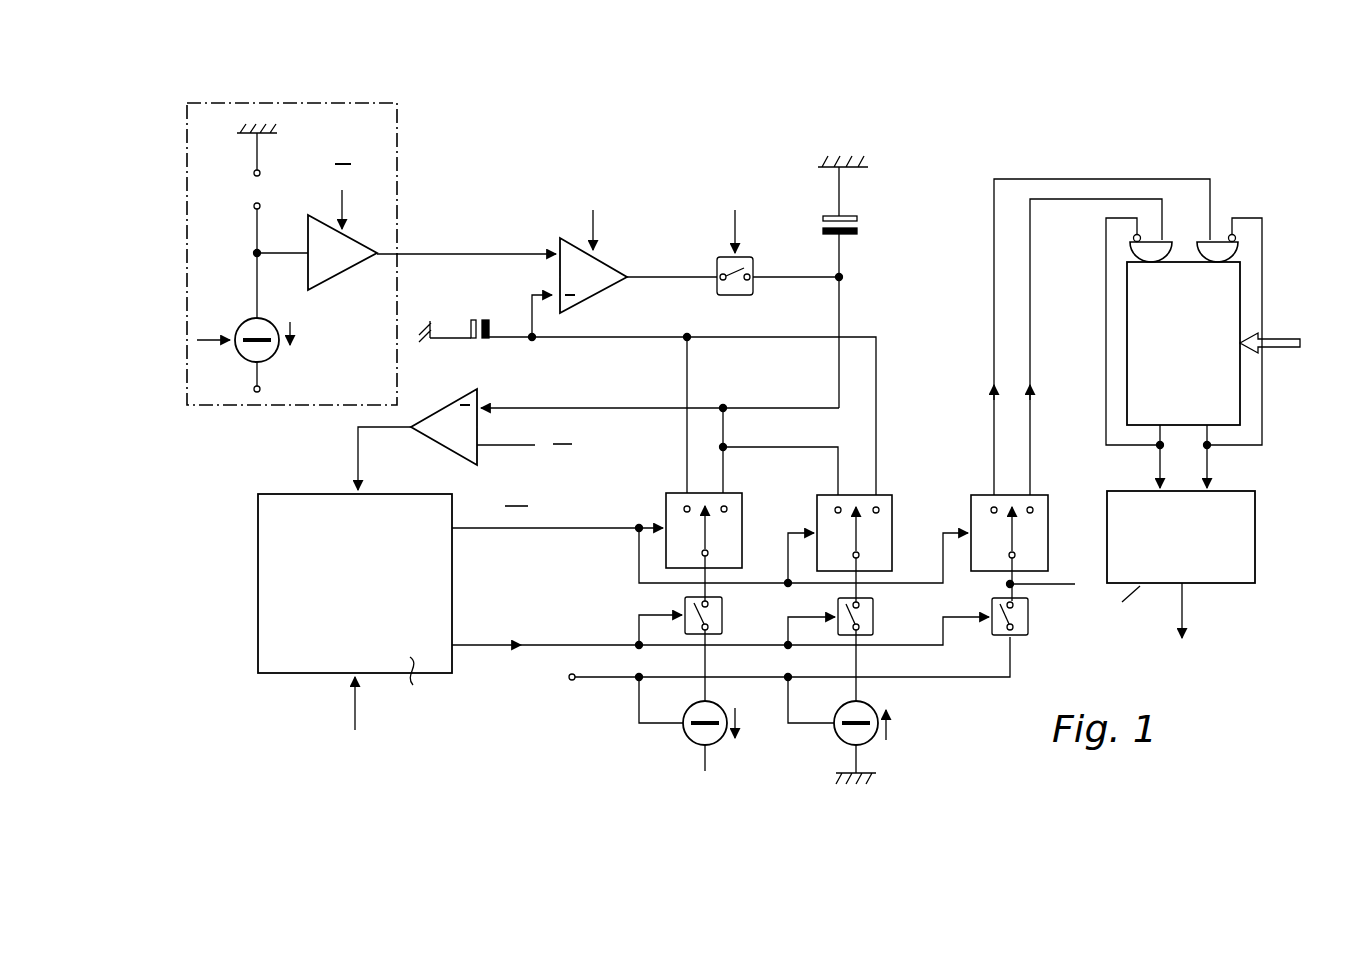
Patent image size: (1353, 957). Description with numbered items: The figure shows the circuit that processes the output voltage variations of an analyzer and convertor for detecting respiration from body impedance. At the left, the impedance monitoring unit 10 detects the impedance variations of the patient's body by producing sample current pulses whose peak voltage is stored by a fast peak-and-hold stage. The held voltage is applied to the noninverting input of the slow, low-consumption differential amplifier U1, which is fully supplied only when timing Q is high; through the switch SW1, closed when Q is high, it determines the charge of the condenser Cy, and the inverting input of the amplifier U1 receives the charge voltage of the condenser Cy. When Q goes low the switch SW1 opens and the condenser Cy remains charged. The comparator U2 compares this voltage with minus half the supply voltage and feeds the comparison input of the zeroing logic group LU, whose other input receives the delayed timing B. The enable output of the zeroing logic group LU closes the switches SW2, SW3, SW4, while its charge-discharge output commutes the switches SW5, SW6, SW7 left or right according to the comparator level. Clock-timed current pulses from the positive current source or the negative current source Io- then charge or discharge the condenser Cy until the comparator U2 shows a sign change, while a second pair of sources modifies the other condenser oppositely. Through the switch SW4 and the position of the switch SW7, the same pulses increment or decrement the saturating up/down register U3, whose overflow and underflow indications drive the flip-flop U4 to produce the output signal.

The impedance monitoring unit 10 is at (442, 120).
The differential amplifier U1 is at (647, 338).
The comparator U2 is at (598, 442).
The UP/DW programmable saturating register U3 is at (1204, 353).
The flip-flop U4 is at (1173, 575).
The switch SW1 is at (777, 250).
The switch SW2 is at (726, 647).
The switch SW3 is at (878, 647).
The switch SW4 is at (1031, 614).
The switch SW5 is at (717, 537).
The switch SW6 is at (870, 538).
The switch SW7 is at (1090, 390).
The zeroing logic group LU is at (634, 626).
The condenser Cy is at (859, 282).
The current source Io- is at (873, 742).